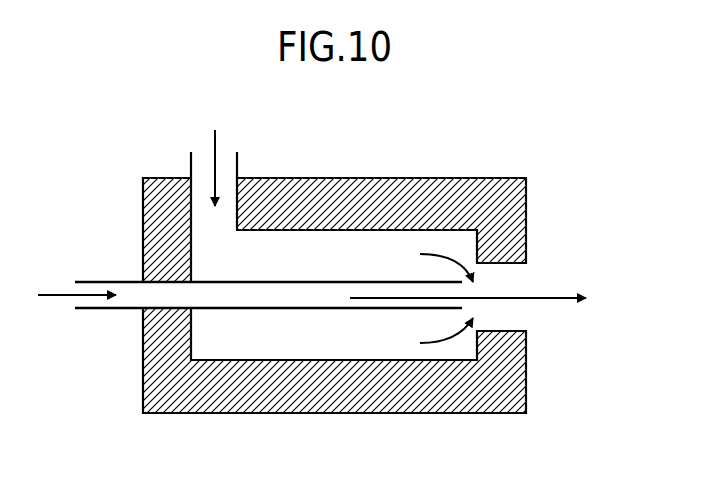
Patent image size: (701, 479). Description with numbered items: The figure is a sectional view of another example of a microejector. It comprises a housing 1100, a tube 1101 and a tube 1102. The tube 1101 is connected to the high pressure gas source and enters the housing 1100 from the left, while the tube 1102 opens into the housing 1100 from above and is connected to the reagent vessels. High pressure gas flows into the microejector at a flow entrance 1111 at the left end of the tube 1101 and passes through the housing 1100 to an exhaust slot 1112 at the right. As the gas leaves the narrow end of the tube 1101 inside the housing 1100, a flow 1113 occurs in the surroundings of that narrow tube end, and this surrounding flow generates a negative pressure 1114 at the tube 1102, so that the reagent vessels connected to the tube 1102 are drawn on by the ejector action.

The housing 1100 is at (397, 195).
The tube 1101 is at (127, 311).
The tube 1102 is at (237, 160).
The flow entrance 1111 is at (74, 308).
The exhaust slot 1112 is at (468, 285).
The flow 1113 is at (429, 295).
The negative pressure 1114 is at (193, 165).